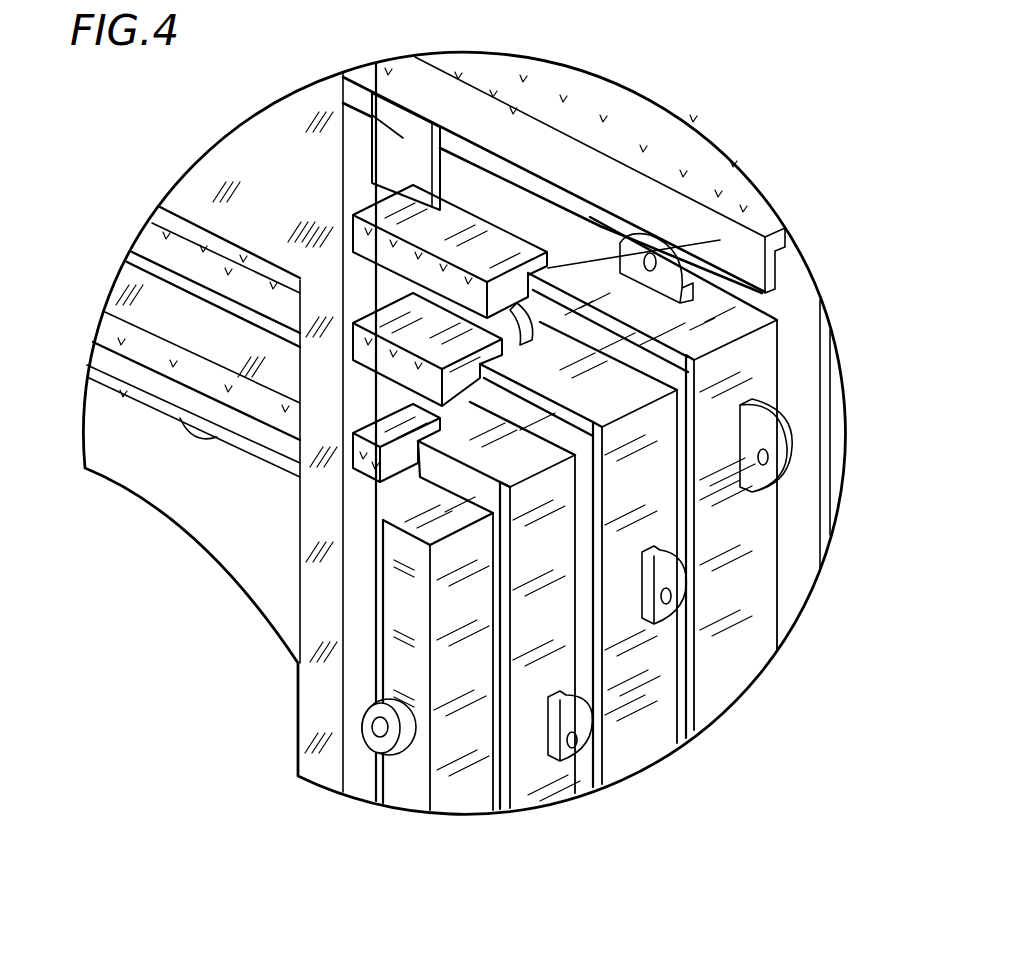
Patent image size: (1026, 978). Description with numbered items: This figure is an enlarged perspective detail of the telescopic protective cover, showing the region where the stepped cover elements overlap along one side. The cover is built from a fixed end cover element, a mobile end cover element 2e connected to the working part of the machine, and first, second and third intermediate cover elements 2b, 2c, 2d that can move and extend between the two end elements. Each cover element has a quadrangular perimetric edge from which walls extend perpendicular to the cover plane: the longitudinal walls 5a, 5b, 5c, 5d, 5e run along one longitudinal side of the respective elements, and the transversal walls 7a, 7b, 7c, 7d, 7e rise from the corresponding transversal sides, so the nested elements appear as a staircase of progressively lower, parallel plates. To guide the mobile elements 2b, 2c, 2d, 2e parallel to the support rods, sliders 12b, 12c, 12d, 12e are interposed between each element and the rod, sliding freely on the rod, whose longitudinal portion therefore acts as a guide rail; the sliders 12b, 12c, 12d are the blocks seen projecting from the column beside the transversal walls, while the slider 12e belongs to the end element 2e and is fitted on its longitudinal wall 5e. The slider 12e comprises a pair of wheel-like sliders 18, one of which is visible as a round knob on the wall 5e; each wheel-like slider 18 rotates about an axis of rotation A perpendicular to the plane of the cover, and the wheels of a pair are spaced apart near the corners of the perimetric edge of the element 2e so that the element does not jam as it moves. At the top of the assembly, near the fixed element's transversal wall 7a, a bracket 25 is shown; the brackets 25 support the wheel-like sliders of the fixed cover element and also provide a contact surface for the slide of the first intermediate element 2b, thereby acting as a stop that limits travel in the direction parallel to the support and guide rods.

The first intermediate cover element 2b is at (763, 567).
The second intermediate cover element 2c is at (623, 737).
The third intermediate cover element 2d is at (522, 775).
The mobile end cover element 2e is at (442, 738).
The longitudinal wall 5a is at (838, 436).
The longitudinal wall 5b is at (758, 507).
The longitudinal wall 5c is at (652, 702).
The longitudinal wall 5d is at (552, 793).
The longitudinal wall 5e is at (448, 773).
The transversal wall 7a is at (690, 158).
The transversal wall 7b is at (715, 307).
The transversal wall 7c is at (580, 372).
The transversal wall 7d is at (575, 455).
The transversal wall 7e is at (392, 512).
The slider 12b is at (460, 257).
The slider 12c is at (387, 331).
The slider 12d is at (370, 431).
The slider 12e is at (378, 745).
The wheel-like slider 18 is at (370, 718).
The bracket 25 is at (403, 138).
The axis of rotation A is at (378, 730).